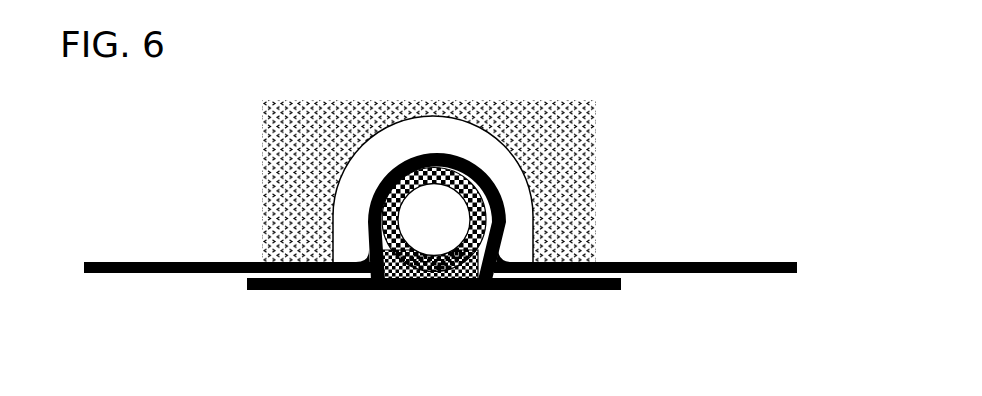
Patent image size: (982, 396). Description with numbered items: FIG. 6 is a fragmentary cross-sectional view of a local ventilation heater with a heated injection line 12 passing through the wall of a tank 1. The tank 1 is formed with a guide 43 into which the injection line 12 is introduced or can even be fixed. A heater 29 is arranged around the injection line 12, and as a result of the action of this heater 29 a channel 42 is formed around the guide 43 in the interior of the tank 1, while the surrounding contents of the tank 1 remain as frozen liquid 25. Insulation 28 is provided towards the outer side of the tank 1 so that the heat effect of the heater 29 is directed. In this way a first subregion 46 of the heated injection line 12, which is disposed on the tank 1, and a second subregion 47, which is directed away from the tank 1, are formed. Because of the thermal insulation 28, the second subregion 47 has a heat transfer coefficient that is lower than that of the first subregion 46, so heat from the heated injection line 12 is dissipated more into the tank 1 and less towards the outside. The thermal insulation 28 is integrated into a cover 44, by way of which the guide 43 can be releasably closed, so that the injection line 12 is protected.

The tank 1 is at (632, 260).
The injection line 12 is at (423, 225).
The frozen liquid 25 is at (292, 158).
The insulation 28 is at (482, 292).
The heater 29 is at (393, 190).
The channel 42 is at (463, 140).
The guide 43 is at (502, 175).
The cover 44 is at (398, 292).
The first subregion 46 is at (422, 152).
The second subregion 47 is at (440, 292).